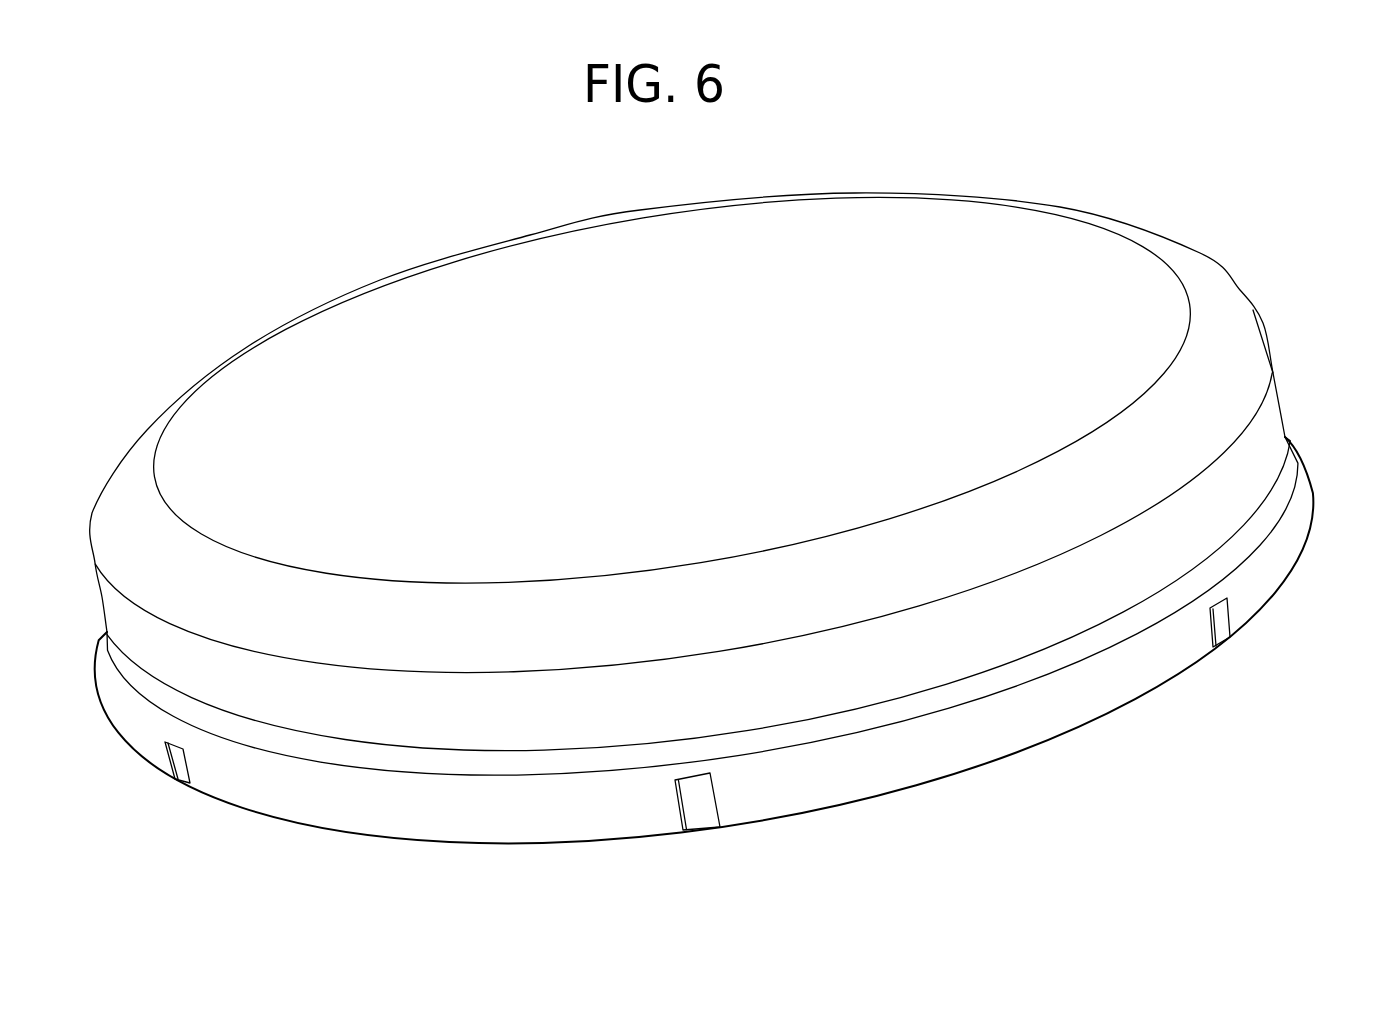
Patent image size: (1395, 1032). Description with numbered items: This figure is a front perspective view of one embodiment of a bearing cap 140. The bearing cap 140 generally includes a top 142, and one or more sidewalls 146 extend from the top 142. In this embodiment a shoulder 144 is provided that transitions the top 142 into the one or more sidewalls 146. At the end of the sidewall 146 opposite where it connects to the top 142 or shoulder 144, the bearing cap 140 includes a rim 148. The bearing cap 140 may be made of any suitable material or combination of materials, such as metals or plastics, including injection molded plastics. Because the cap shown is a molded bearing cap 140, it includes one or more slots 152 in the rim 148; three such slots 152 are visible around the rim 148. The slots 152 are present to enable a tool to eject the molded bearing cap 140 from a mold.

The bearing cap 140 is at (1114, 183).
The top 142 is at (1163, 280).
The shoulder 144 is at (1237, 313).
The sidewall 146 is at (1270, 417).
The rim 148 is at (1290, 547).
The slot 152 is at (693, 810).